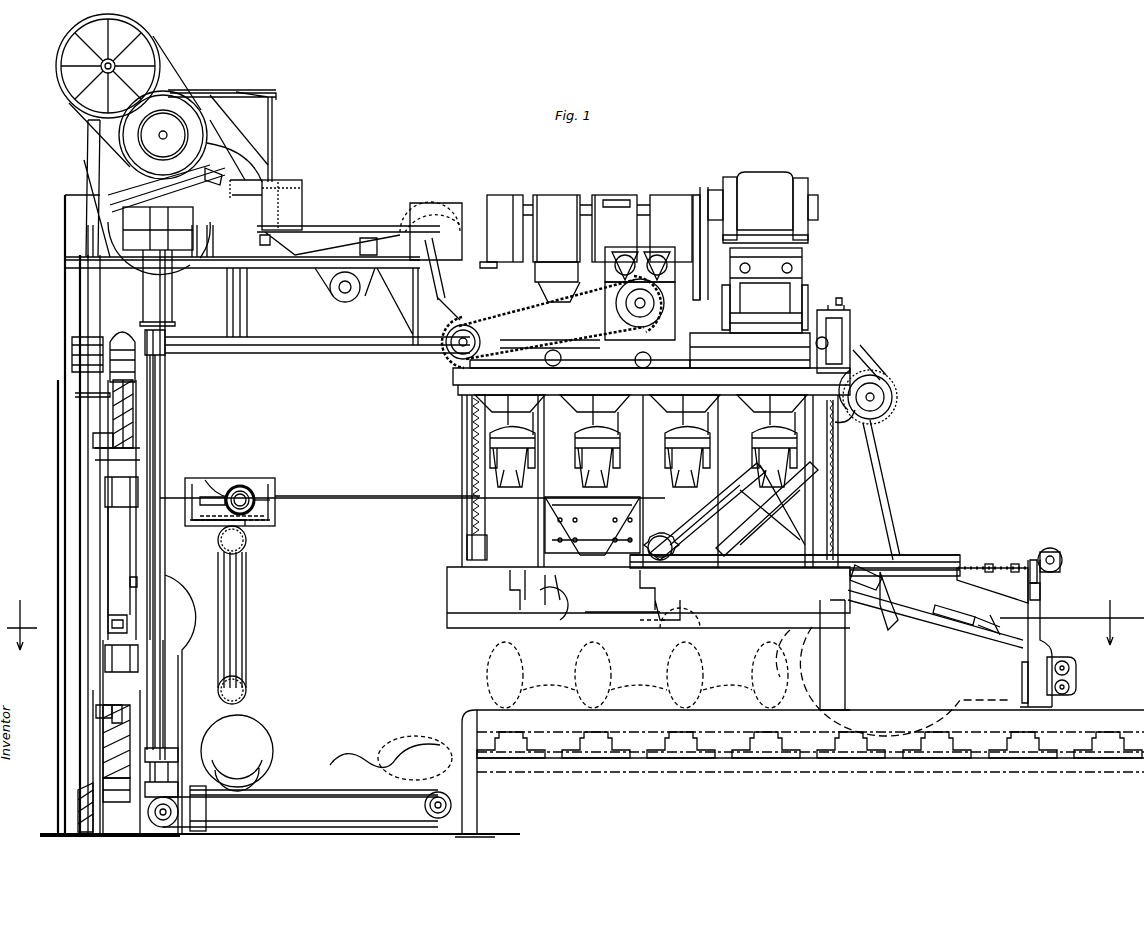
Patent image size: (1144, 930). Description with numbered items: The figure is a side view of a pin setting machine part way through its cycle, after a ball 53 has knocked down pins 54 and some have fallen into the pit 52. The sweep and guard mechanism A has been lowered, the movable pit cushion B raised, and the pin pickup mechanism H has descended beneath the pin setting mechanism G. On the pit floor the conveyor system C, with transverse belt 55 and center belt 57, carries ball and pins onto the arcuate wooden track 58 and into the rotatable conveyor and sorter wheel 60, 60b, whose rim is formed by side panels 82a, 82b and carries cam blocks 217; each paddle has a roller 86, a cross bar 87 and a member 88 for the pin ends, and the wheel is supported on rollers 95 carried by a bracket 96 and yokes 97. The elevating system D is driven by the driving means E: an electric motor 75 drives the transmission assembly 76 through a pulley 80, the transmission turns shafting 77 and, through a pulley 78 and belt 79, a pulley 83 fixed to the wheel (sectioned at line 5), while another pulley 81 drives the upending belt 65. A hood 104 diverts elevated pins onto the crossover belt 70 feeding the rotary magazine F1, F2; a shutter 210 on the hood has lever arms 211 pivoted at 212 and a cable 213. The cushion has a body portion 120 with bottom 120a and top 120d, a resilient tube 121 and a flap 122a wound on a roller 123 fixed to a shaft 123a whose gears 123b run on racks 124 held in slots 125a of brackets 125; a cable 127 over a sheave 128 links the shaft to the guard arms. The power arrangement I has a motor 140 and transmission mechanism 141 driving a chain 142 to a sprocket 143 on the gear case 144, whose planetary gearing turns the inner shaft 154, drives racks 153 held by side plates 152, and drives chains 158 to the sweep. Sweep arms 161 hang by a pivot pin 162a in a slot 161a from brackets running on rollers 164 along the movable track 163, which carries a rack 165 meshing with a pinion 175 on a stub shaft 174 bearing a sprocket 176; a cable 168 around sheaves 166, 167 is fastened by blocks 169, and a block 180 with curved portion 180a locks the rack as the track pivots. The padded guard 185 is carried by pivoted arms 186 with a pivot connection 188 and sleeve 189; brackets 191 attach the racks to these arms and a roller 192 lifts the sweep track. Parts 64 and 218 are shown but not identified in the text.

The pulley 81 is at (55, 76).
The electric motor 75 is at (170, 102).
The driving means E is at (78, 112).
The cable 213 is at (272, 112).
The hood 104 is at (232, 155).
The pulley 80 is at (108, 215).
The transmission assembly 76 is at (165, 265).
The pulley 78 is at (96, 283).
The upending belt 65 is at (88, 300).
The switch box 218 is at (300, 196).
The lever arms 211 is at (268, 178).
The pivot 212 is at (230, 190).
The shutter 210 is at (295, 233).
The crossover belt 70 is at (340, 232).
The beam 64 is at (338, 352).
The member 88 is at (52, 803).
The roller 86 is at (72, 352).
The cross bar 87 is at (165, 345).
The belt 79 is at (100, 397).
The side panel 82a is at (140, 402).
The side panel 82b is at (140, 430).
The cam blocks 217 is at (140, 446).
The ball and pin elevating system D is at (86, 424).
The pulley 83 is at (93, 442).
The rollers 95 is at (105, 494).
The bracket 96 is at (104, 568).
The yoke 97 is at (110, 628).
The shafting 77 is at (165, 572).
The section line 5 is at (575, 619).
The arcuate wooden track 58 is at (78, 830).
The brackets 125 is at (200, 478).
The slot 125a is at (222, 480).
The roller 123 is at (250, 490).
The shaft 123a is at (242, 490).
The gears 123b is at (275, 497).
The racks 124 is at (272, 520).
The flap 122a is at (225, 525).
The top 120d is at (248, 546).
The cable 127 is at (330, 496).
The body portion 120 is at (246, 634).
The movable pit cushion B is at (257, 597).
The bottom 120a is at (246, 676).
The resilient tube 121 is at (246, 690).
The ball 53 is at (262, 730).
The endless belt 57 is at (322, 826).
The conveyor system C is at (280, 778).
The endless belt 55 is at (312, 780).
The pit 52 is at (460, 824).
The pins 54 is at (430, 740).
The rotatable conveyor and sorter wheel 60 is at (848, 712).
The filler unit F1 is at (578, 190).
The motor 140 is at (785, 170).
The power arrangement I is at (835, 215).
The transmission mechanism 141 is at (780, 296).
The pin setting mechanism G is at (460, 446).
The pin pickup mechanism H is at (456, 598).
The chains 158 is at (728, 485).
The stub shaft 174 is at (706, 495).
The pinion 175 is at (640, 540).
The sheave 128 is at (778, 492).
The sprocket 176 is at (682, 560).
The sheave 166 is at (630, 560).
The block 180 is at (632, 588).
The curved portion 180a is at (650, 624).
The chain drive F2 is at (566, 307).
The chain 142 is at (852, 370).
The gear case 144 is at (876, 380).
The sprocket 143 is at (895, 390).
The inner shaft 154 is at (896, 397).
The side plates 152 is at (880, 416).
The racks 153 is at (888, 490).
The rack 165 is at (930, 560).
The movable track 163 is at (918, 580).
The rollers 164 is at (978, 588).
The pivot pin 162a is at (1033, 560).
The blocks 169 is at (1008, 562).
The cable 168 is at (1005, 572).
The sheave 167 is at (1062, 556).
The slot 161a is at (1042, 580).
The vertical arms 161 is at (1042, 628).
The sweep and guard mechanism A is at (1047, 617).
The padded member 185 is at (1078, 676).
The pivoted arms 186 is at (945, 612).
The pivot connection 188 is at (978, 632).
The partially cut out sleeve 189 is at (1000, 636).
The brackets 191 is at (892, 610).
The roller 192 is at (876, 590).
The support 60b is at (893, 668).